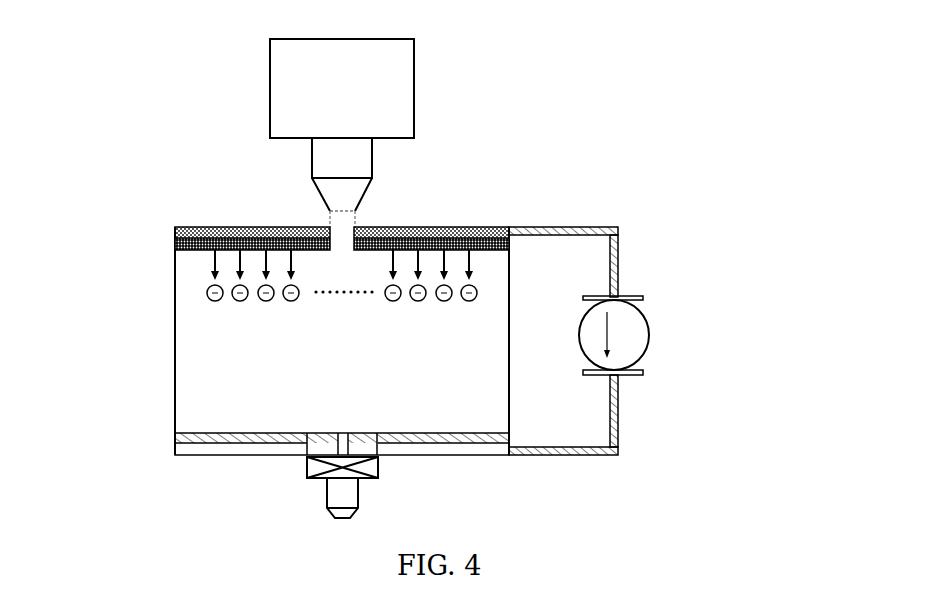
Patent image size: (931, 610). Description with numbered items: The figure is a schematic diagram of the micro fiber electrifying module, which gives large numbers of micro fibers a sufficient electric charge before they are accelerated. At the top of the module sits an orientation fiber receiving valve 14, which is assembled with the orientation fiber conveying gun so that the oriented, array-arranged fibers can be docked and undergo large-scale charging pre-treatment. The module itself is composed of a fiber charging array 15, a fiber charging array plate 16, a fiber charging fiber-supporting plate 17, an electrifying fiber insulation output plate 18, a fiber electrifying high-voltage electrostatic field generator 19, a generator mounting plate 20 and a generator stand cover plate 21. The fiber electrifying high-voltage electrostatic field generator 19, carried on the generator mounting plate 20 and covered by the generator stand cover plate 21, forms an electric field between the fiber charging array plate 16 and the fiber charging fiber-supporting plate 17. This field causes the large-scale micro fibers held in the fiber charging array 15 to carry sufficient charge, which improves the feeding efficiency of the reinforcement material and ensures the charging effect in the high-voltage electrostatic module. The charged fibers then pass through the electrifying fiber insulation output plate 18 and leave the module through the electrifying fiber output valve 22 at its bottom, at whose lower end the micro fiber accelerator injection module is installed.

The orientation fiber receiving valve 14 is at (414, 119).
The fiber charging array 15 is at (175, 242).
The fiber charging array plate 16 is at (297, 227).
The fiber charging fiber-supporting plate 17 is at (175, 438).
The electrifying fiber insulation output plate 18 is at (327, 437).
The fiber electrifying high-voltage electrostatic field generator 19 is at (648, 335).
The generator mounting plate 20 is at (620, 268).
The generator stand cover plate 21 is at (643, 372).
The electrifying fiber output valve 22 is at (378, 463).